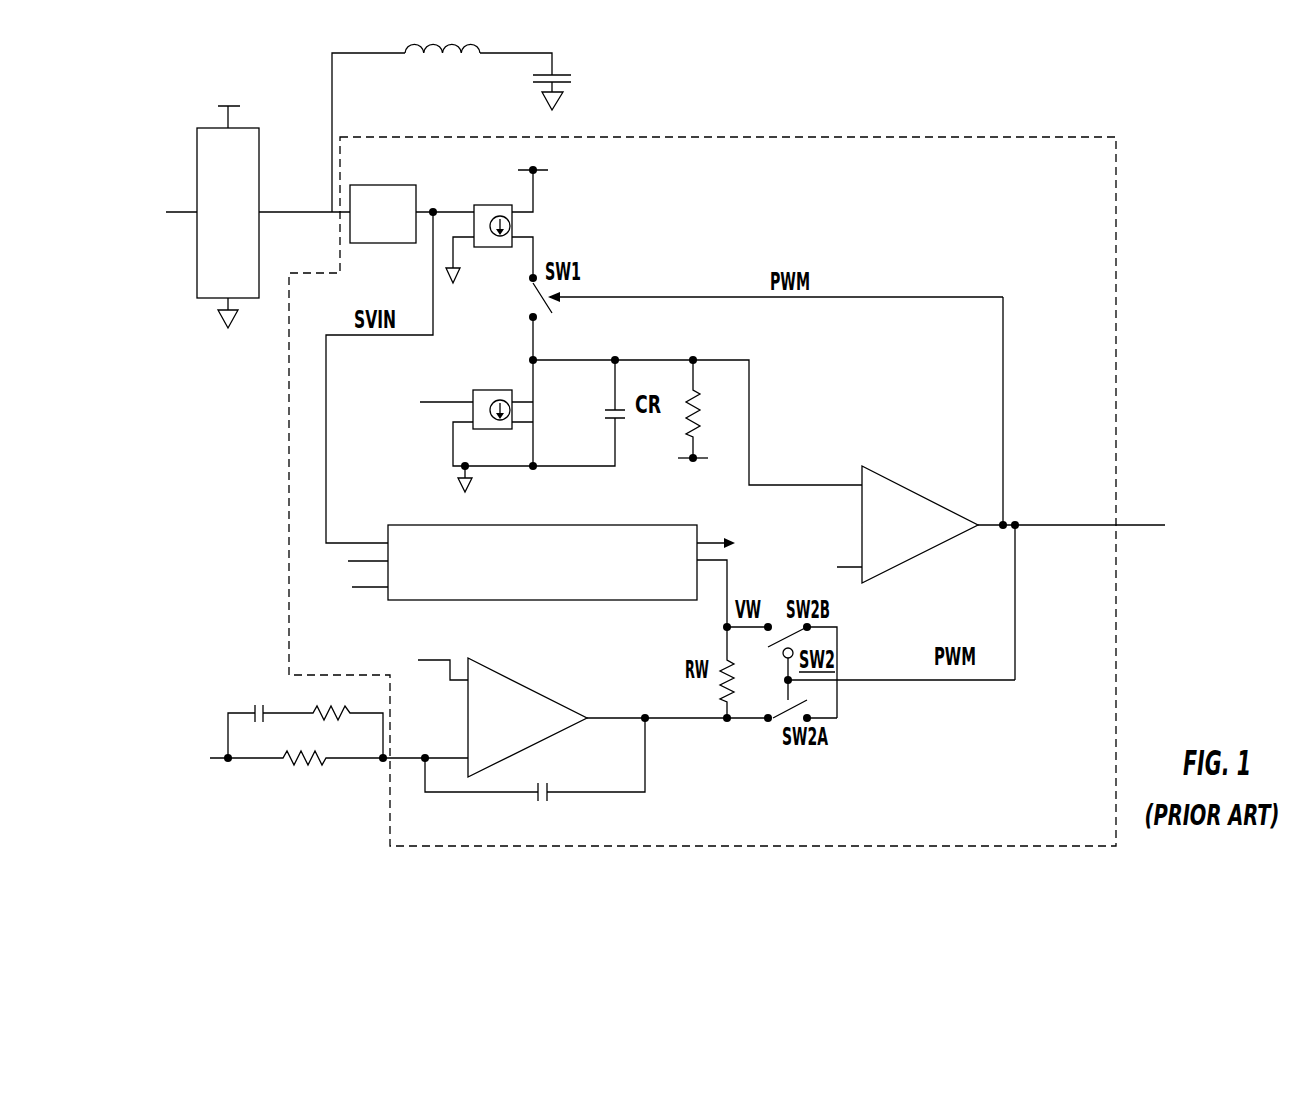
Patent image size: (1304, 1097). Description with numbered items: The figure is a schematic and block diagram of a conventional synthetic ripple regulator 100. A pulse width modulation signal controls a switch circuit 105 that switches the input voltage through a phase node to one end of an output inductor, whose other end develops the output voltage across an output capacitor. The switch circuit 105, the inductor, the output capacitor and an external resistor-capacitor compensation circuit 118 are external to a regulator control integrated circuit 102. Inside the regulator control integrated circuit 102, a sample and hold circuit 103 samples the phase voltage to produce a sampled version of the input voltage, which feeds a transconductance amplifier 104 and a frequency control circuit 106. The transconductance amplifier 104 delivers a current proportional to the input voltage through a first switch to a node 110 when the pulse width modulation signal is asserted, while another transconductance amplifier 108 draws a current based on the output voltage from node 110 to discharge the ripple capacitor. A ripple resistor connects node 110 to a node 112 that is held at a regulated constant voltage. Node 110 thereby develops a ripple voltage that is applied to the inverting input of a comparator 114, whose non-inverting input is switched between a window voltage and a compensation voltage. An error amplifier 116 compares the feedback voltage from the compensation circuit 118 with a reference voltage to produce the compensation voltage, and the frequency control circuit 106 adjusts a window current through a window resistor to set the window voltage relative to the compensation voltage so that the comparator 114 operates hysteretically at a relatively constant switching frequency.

The synthetic ripple regulator 100 is at (877, 99).
The regulator control integrated circuit 102 is at (969, 776).
The sample and hold circuit 103 is at (412, 201).
The transconductance amplifier 104 is at (497, 226).
The switch circuit 105 is at (212, 254).
The frequency control circuit 106 is at (514, 594).
The transconductance amplifier 108 is at (498, 437).
The node 110 is at (638, 360).
The node 112 is at (688, 447).
The comparator 114 is at (878, 549).
The error amplifier 116 is at (498, 742).
The external resistor-capacitor compensation circuit 118 is at (259, 771).